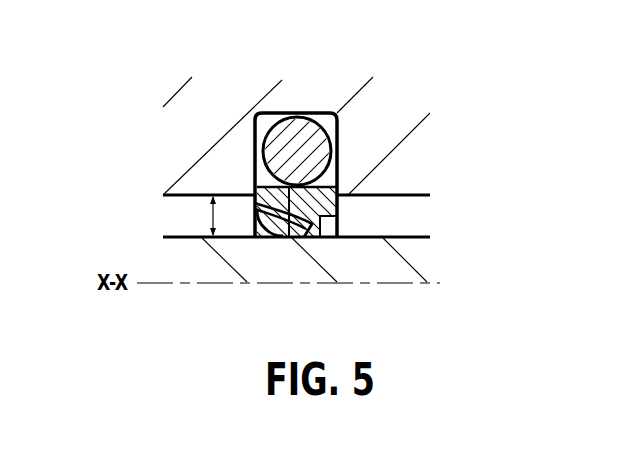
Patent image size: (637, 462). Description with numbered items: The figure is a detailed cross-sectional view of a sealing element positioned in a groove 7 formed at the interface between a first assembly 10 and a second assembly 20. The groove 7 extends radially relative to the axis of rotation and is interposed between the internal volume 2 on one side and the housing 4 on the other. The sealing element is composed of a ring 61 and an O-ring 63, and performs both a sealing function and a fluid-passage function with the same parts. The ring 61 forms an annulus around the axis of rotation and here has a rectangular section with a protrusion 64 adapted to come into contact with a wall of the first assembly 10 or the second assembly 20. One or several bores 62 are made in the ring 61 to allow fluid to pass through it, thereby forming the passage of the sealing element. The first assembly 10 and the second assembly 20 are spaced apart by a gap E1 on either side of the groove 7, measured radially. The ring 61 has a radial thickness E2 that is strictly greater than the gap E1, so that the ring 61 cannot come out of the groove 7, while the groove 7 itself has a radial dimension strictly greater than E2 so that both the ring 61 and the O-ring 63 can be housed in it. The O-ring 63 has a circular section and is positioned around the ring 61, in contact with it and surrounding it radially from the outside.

The first assembly 10 is at (215, 88).
The groove 7 is at (254, 134).
The O-ring 63 is at (312, 145).
The internal volume 2 is at (152, 216).
The housing 4 is at (450, 224).
The second assembly 20 is at (411, 264).
The bore 62 is at (262, 205).
The ring 61 is at (341, 208).
The protrusion 64 is at (275, 240).
The gap E1 is at (213, 216).
The thickness E2 is at (322, 236).